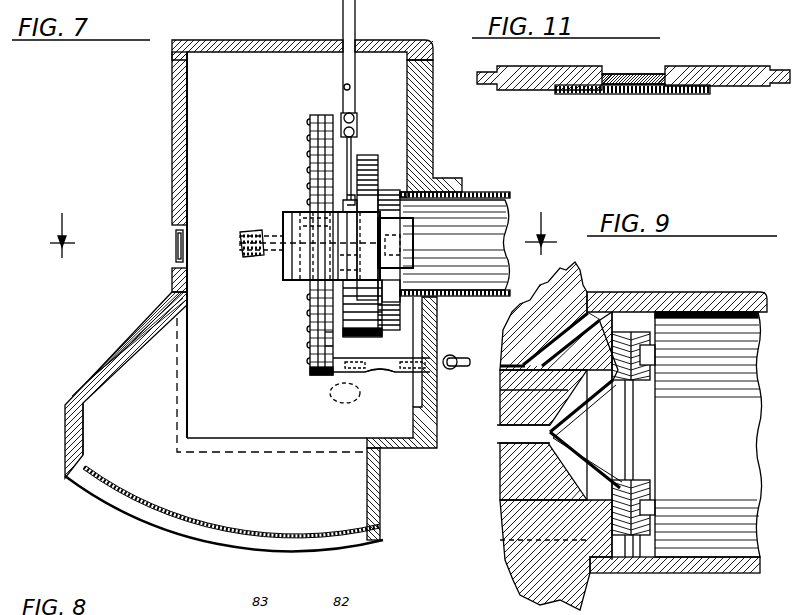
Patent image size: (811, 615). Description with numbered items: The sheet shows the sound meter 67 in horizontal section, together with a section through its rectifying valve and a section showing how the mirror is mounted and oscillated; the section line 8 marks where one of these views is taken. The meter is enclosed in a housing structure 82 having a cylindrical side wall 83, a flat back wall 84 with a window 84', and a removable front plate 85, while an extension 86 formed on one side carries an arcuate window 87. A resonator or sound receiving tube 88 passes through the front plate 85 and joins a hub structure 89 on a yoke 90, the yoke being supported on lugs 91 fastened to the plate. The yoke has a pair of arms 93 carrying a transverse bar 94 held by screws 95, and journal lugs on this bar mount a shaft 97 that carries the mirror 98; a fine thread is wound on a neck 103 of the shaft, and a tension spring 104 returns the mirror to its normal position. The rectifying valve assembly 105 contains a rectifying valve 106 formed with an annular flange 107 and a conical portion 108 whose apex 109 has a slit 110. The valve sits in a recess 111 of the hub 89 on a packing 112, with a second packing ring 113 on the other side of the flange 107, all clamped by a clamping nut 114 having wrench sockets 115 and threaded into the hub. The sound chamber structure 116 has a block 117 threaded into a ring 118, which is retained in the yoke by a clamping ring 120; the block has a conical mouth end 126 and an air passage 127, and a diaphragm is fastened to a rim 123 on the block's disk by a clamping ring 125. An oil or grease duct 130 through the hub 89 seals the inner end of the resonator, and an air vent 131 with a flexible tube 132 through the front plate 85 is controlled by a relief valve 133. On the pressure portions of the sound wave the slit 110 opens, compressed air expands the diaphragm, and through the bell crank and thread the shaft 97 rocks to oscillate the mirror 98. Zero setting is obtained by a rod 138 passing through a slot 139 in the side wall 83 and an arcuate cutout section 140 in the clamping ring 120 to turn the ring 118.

In FIG. 7, the section line 8- 8 is at (64, 235).
In FIG. 9, the section line 8- 8 is at (541, 233).
In FIG. 7, the sound meter 67 is at (346, 40).
In FIG. 7, the housing structure 82 is at (170, 290).
In FIG. 7, the cylindrical side wall 83 is at (255, 40).
In FIG. 7, the flat back wall 84 is at (162, 245).
In FIG. 7, the window 84' is at (160, 246).
In FIG. 7, the removable front plate 85 is at (433, 136).
In FIG. 7, the extension 86 is at (270, 500).
In FIG. 7, the arcuate window 87 is at (110, 494).
In FIG. 7, the resonator or sound receiving tube 88 is at (494, 192).
In FIG. 9, the resonator or sound receiving tube 88 is at (740, 573).
In FIG. 7, the hub structure 89 is at (388, 300).
In FIG. 9, the hub structure 89 is at (516, 555).
In FIG. 7, the yoke 90 is at (380, 174).
In FIG. 7, the lugs 91 is at (408, 245).
In FIG. 7, the arms 93 is at (315, 283).
In FIG. 7, the transverse bar 94 is at (296, 283).
In FIG. 7, the screws 95 is at (282, 270).
In FIG. 11, the shaft 97 is at (748, 86).
In FIG. 7, the mirror 98 is at (252, 257).
In FIG. 11, the mirror 98 is at (686, 94).
In FIG. 11, the neck 103 is at (632, 74).
In FIG. 7, the tension spring 104 is at (244, 242).
In FIG. 9, the rectifying valve assembly 105 is at (665, 436).
In FIG. 9, the rectifying valve 106 is at (560, 418).
In FIG. 9, the annular flange 107 is at (628, 488).
In FIG. 9, the conical portion 108 is at (548, 396).
In FIG. 9, the apex 109 is at (545, 435).
In FIG. 9, the slit 110 is at (558, 431).
In FIG. 9, the recess 111 is at (628, 535).
In FIG. 9, the packing 112 is at (622, 537).
In FIG. 9, the second packing ring 113 is at (638, 535).
In FIG. 9, the clamping nut 114 is at (642, 505).
In FIG. 9, the wrench sockets 115 is at (645, 360).
In FIG. 7, the sound chamber structure 116 is at (312, 356).
In FIG. 9, the block 117 is at (507, 488).
In FIG. 7, the ring 118 is at (346, 196).
In FIG. 7, the clamping ring 120 is at (350, 336).
In FIG. 7, the rim 123 is at (325, 332).
In FIG. 7, the clamping ring 125 is at (322, 345).
In FIG. 9, the conical mouth end 126 is at (613, 398).
In FIG. 9, the air passage 127 is at (507, 443).
In FIG. 9, the oil or grease duct 130 is at (600, 322).
In FIG. 7, the air vent 131 is at (345, 393).
In FIG. 7, the flexible tube 132 is at (378, 372).
In FIG. 7, the relief valve 133 is at (452, 355).
In FIG. 7, the rod 138 is at (356, 130).
In FIG. 7, the slot 139 is at (344, 87).
In FIG. 7, the arcuate cutout section 140 is at (346, 206).